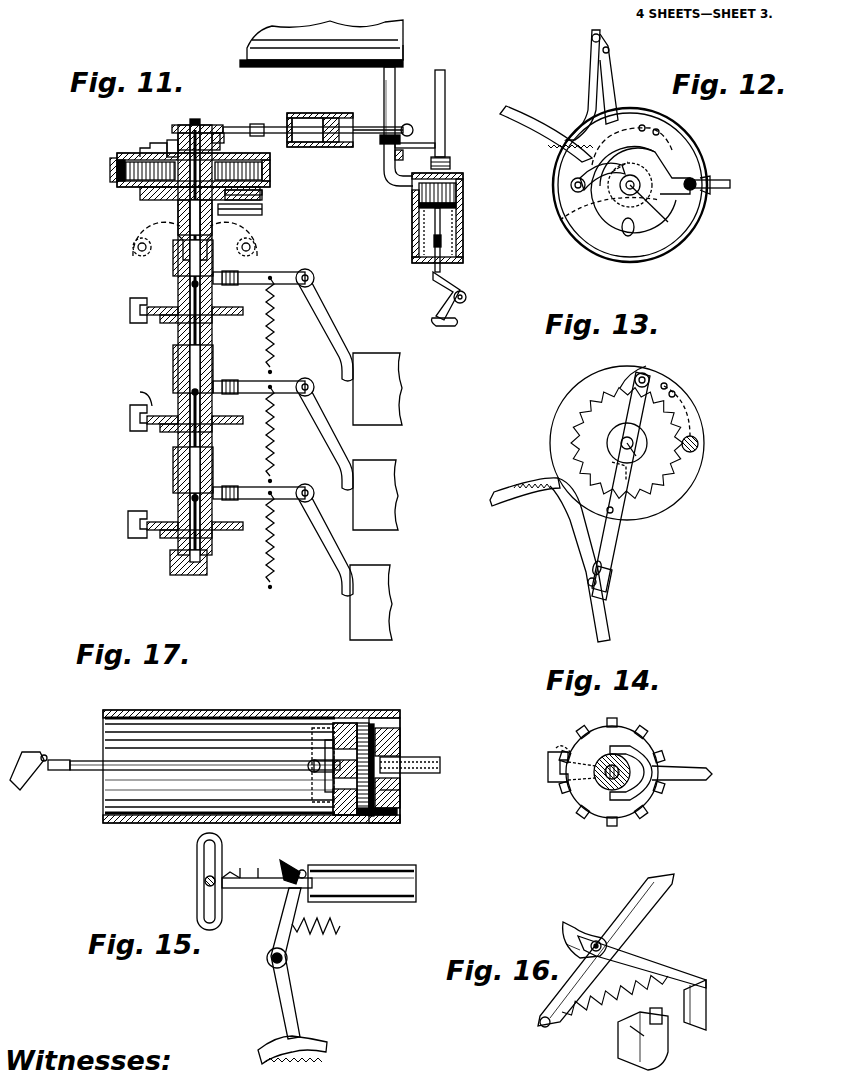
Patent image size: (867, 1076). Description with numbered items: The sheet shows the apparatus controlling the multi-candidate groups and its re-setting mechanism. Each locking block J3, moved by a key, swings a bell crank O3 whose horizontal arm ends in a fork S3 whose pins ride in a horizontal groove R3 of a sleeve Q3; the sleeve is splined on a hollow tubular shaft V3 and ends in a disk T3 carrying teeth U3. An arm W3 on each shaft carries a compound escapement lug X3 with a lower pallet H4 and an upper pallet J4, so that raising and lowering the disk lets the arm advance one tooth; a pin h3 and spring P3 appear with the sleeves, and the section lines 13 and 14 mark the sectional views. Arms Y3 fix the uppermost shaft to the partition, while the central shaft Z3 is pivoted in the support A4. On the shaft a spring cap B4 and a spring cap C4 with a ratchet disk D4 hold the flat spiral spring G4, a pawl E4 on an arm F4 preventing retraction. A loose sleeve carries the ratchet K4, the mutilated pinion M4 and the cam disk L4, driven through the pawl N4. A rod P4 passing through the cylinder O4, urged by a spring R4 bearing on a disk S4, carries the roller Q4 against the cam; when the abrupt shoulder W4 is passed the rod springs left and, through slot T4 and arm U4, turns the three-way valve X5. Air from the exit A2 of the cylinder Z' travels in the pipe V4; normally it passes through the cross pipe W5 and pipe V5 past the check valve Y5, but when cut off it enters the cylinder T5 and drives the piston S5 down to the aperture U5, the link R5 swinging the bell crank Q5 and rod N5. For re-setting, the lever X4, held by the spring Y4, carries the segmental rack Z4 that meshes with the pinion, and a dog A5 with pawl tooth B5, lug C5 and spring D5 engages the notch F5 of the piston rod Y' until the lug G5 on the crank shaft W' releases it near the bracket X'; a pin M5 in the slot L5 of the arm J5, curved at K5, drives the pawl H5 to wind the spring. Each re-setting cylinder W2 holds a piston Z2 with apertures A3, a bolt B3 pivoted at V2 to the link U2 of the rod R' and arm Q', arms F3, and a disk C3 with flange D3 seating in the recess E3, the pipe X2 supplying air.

In FIG. 11, the central shaft Z3 is at (190, 462).
In FIG. 12, the central shaft Z3 is at (670, 224).
In FIG. 13, the central shaft Z3 is at (642, 461).
In FIG. 14, the central shaft Z3 is at (604, 766).
In FIG. 11, the cam disk L4 is at (192, 124).
In FIG. 12, the cam disk L4 is at (648, 210).
In FIG. 11, the ratchet K4 is at (222, 128).
In FIG. 12, the ratchet K4 is at (648, 160).
In FIG. 11, the mutilated pinion M4 is at (170, 138).
In FIG. 12, the mutilated pinion M4 is at (570, 182).
In FIG. 11, the spring-pressed pawl N4 is at (148, 143).
In FIG. 11, the spring cap B4 is at (120, 153).
In FIG. 12, the spring cap B4 is at (590, 230).
In FIG. 11, the flat spiral spring G4 is at (110, 170).
In FIG. 11, the spring cap or plate C4 is at (140, 196).
In FIG. 12, the spring cap or plate C4 is at (600, 256).
In FIG. 13, the spring cap or plate C4 is at (680, 488).
In FIG. 11, the spring-pressed pawl E4 is at (262, 192).
In FIG. 13, the spring-pressed pawl E4 is at (698, 440).
In FIG. 11, the arm F4 is at (256, 214).
In FIG. 13, the arm F4 is at (698, 450).
In FIG. 11, the section line 13 is at (110, 200).
In FIG. 11, the section line 14 is at (140, 360).
In FIG. 11, the arms Y3 is at (133, 246).
In FIG. 11, the ratchet disk D4 is at (243, 204).
In FIG. 12, the ratchet disk D4 is at (630, 185).
In FIG. 13, the ratchet disk D4 is at (598, 426).
In FIG. 11, the cylinder Z' is at (321, 43).
In FIG. 15, the cylinder Z' is at (362, 883).
In FIG. 11, the exit A2 is at (405, 58).
In FIG. 11, the anti-friction roller Q4 is at (257, 124).
In FIG. 12, the anti-friction roller Q4 is at (712, 190).
In FIG. 11, the cylinder O4 is at (323, 113).
In FIG. 11, the helically coiled expanding spring R4 is at (332, 142).
In FIG. 11, the pin or disk S4 is at (315, 142).
In FIG. 11, the rod P4 is at (362, 127).
In FIG. 12, the rod P4 is at (722, 180).
In FIG. 11, the arm U4 is at (380, 142).
In FIG. 11, the vertical slot T4 is at (409, 125).
In FIG. 11, the pipe V4 is at (396, 92).
In FIG. 11, the three-way valve X5 is at (407, 162).
In FIG. 11, the cross pipe W5 is at (420, 143).
In FIG. 11, the pipe V5 is at (445, 90).
In FIG. 11, the check valve Y5 is at (450, 162).
In FIG. 11, the cylinder T5 is at (412, 222).
In FIG. 11, the piston S5 is at (456, 198).
In FIG. 11, the aperture U5 is at (434, 243).
In FIG. 11, the link R5 is at (440, 248).
In FIG. 11, the bell crank Q5 is at (450, 310).
In FIG. 11, the rod N5 is at (446, 327).
In FIG. 11, the sleeve Q3 is at (180, 268).
In FIG. 14, the sleeve Q3 is at (600, 788).
In FIG. 11, the fork S3 is at (232, 272).
In FIG. 14, the fork S3 is at (650, 746).
In FIG. 11, the hollow tubular shaft V3 is at (215, 296).
In FIG. 14, the hollow tubular shaft V3 is at (632, 772).
In FIG. 11, the disk T3 is at (236, 315).
In FIG. 14, the disk T3 is at (612, 806).
In FIG. 11, the spurs or teeth U3 is at (226, 396).
In FIG. 14, the spurs or teeth U3 is at (620, 720).
In FIG. 11, the arm W3 is at (150, 318).
In FIG. 11, the compound escapement lug X3 is at (130, 308).
In FIG. 14, the compound escapement lug X3 is at (548, 762).
In FIG. 11, the horizontal groove R3 is at (178, 392).
In FIG. 11, the pin h3 is at (178, 284).
In FIG. 11, the upper lug or pallet J4 is at (132, 391).
In FIG. 14, the upper lug or pallet J4 is at (556, 748).
In FIG. 11, the spring P3 is at (276, 330).
In FIG. 11, the bell crank lever O3 is at (318, 302).
In FIG. 14, the bell crank lever O3 is at (708, 773).
In FIG. 11, the locking block J3 is at (376, 496).
In FIG. 11, the support A4 is at (207, 570).
In FIG. 12, the abrupt shoulder W4 is at (672, 160).
In FIG. 12, the segmental rack Z4 is at (534, 122).
In FIG. 13, the segmental rack Z4 is at (500, 498).
In FIG. 15, the segmental rack Z4 is at (310, 1054).
In FIG. 12, the lever X4 is at (590, 70).
In FIG. 13, the lever X4 is at (606, 612).
In FIG. 15, the lever X4 is at (292, 1002).
In FIG. 16, the lever X4 is at (650, 900).
In FIG. 12, the curve K5 is at (612, 88).
In FIG. 13, the curve K5 is at (610, 556).
In FIG. 12, the slot L5 is at (612, 50).
In FIG. 13, the slot L5 is at (590, 568).
In FIG. 13, the spring-pressed pawl H5 is at (636, 370).
In FIG. 13, the lever arm J5 is at (612, 536).
In FIG. 13, the pin M5 is at (588, 584).
In FIG. 17, the re-setting cylinder W2 is at (222, 700).
In FIG. 17, the link U2 is at (128, 770).
In FIG. 17, the rod R' is at (28, 759).
In FIG. 17, the arm Q' is at (52, 782).
In FIG. 17, the pivot V2 is at (306, 772).
In FIG. 17, the arms F3 is at (330, 740).
In FIG. 17, the apertures A3 is at (328, 740).
In FIG. 17, the piston Z2 is at (346, 722).
In FIG. 17, the bolt B3 is at (340, 792).
In FIG. 17, the annular recess E3 is at (386, 718).
In FIG. 17, the short pipe X2 is at (430, 757).
In FIG. 17, the disk C3 is at (400, 792).
In FIG. 17, the flange D3 is at (400, 814).
In FIG. 15, the slotted bracket X' is at (196, 881).
In FIG. 15, the crank shaft W' is at (189, 879).
In FIG. 16, the crank shaft W' is at (664, 1041).
In FIG. 15, the piston rod Y' is at (267, 870).
In FIG. 15, the notch F5 is at (240, 868).
In FIG. 15, the coiled spring D5 is at (290, 860).
In FIG. 16, the coiled spring D5 is at (615, 1009).
In FIG. 15, the dog A5 is at (305, 868).
In FIG. 16, the dog A5 is at (644, 962).
In FIG. 15, the coiled spring Y4 is at (322, 930).
In FIG. 16, the pawl tooth B5 is at (576, 928).
In FIG. 16, the lug C5 is at (706, 1010).
In FIG. 16, the lug G5 is at (628, 1036).
In FIG. 14, the lower lug or pallet H4 is at (560, 790).